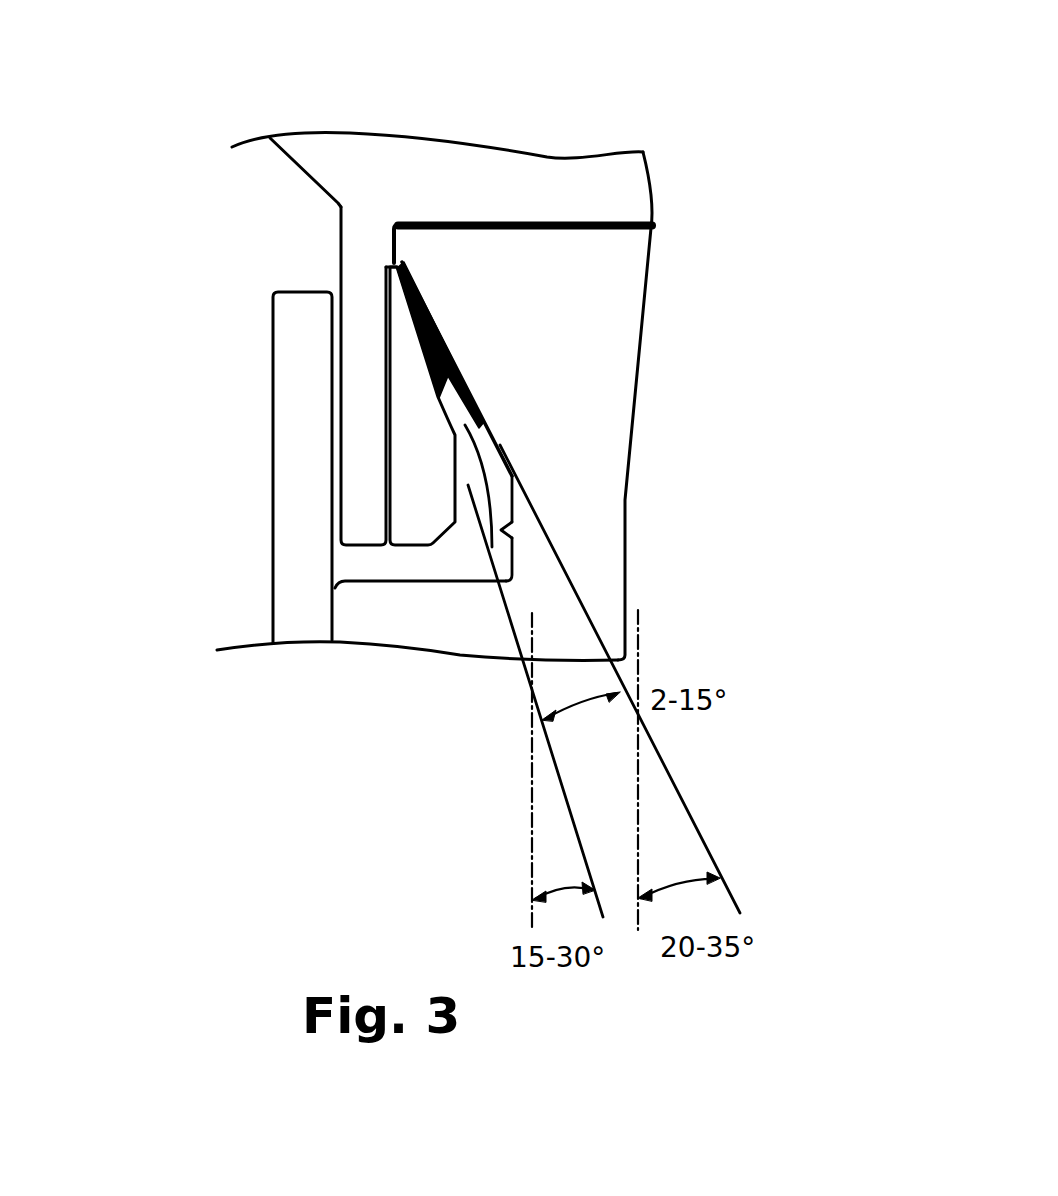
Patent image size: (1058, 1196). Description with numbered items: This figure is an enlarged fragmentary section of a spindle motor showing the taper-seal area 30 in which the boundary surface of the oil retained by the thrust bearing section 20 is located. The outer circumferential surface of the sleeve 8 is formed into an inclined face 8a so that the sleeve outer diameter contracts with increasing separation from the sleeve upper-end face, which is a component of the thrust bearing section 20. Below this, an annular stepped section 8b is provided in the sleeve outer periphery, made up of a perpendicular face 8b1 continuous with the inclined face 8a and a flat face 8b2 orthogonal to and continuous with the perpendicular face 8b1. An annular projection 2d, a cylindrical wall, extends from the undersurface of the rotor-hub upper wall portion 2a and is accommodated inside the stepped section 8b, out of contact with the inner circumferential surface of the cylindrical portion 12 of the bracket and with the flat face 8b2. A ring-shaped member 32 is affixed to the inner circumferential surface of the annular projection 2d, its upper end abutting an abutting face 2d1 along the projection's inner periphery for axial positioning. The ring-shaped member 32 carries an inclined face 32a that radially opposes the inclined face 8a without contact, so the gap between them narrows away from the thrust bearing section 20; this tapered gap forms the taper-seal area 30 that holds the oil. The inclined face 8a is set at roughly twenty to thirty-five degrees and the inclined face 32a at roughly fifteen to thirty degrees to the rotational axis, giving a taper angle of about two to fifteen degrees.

The upper wall portion 2a is at (553, 188).
The annular projection 2d is at (360, 385).
The abutting face 2d1 is at (389, 262).
The cylindrical portion 12 is at (307, 508).
The thrust bearing section 20 is at (490, 220).
The ring-shaped member 32 is at (412, 365).
The inclined face 32a is at (448, 420).
The inclined face 8a is at (478, 422).
The sleeve 8 is at (580, 440).
The annular stepped section 8b is at (517, 580).
The perpendicular face 8b1 is at (503, 530).
The flat face 8b2 is at (428, 574).
The taper-seal area 30 is at (492, 547).